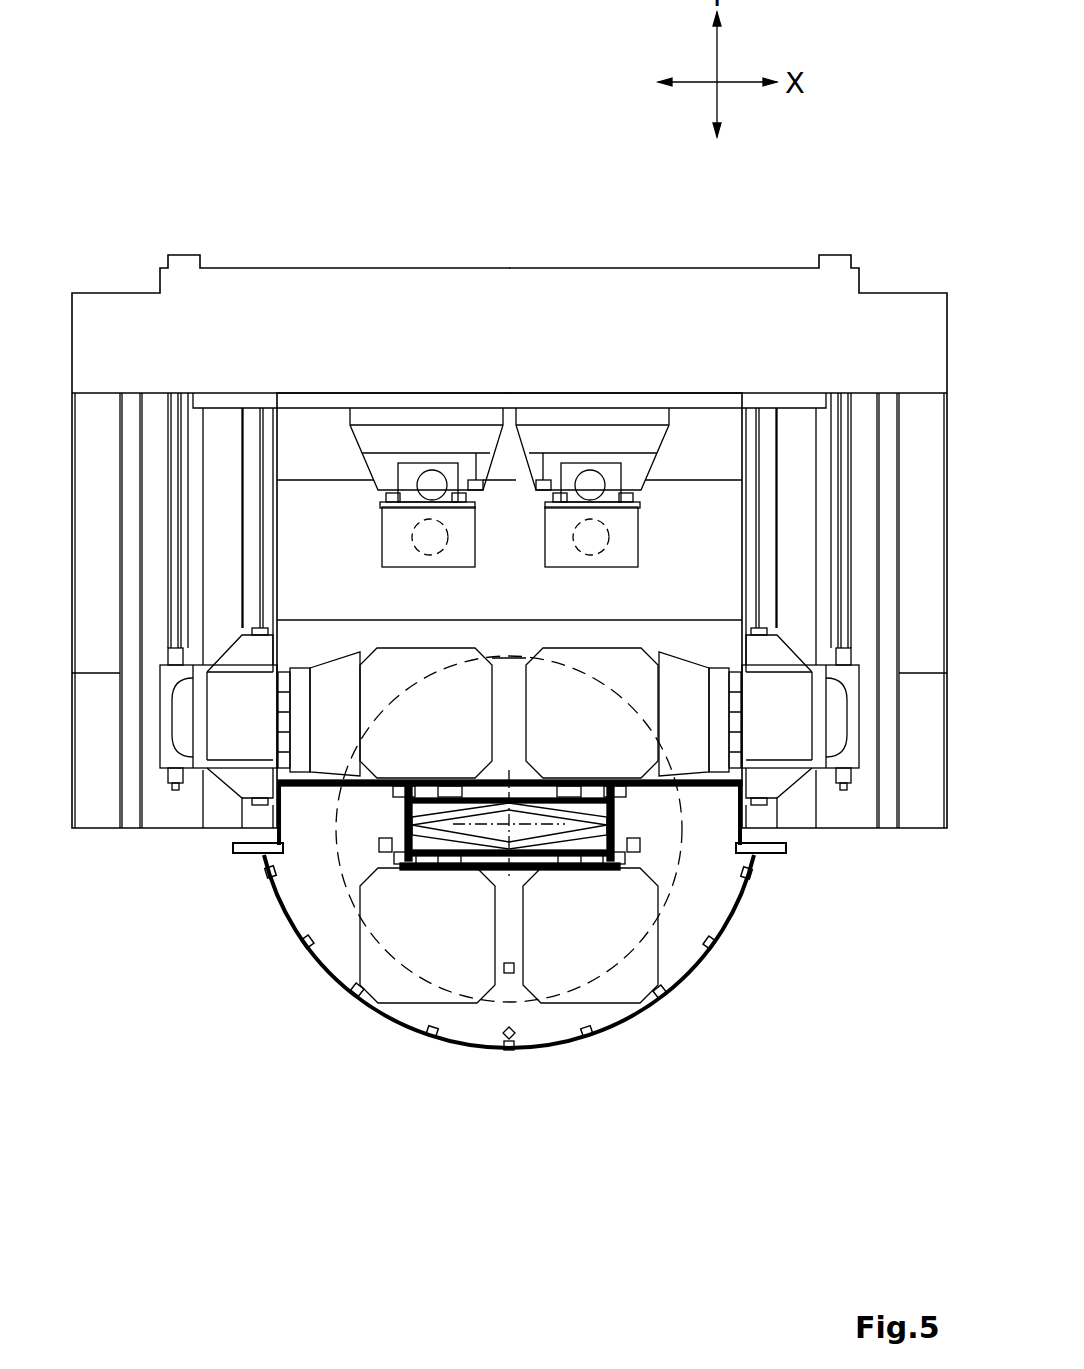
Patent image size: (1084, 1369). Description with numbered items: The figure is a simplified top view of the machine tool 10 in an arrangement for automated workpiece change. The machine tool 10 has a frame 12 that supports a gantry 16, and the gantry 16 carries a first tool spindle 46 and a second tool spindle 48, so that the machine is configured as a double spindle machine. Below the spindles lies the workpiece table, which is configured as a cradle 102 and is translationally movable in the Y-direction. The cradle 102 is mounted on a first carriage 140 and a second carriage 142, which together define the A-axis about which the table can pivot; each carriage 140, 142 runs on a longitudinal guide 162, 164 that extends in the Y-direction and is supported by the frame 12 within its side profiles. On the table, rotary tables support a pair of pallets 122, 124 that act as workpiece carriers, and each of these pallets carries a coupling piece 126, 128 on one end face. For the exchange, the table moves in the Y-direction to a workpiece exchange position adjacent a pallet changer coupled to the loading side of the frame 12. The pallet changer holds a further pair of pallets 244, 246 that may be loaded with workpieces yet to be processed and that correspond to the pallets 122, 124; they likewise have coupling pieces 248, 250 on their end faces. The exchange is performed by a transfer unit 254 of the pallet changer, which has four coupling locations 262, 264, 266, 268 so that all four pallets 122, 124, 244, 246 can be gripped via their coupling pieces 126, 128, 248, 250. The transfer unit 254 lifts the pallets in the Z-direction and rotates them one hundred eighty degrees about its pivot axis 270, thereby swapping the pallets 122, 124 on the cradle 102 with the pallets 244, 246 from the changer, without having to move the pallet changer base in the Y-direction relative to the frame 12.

The machine tool 10 is at (178, 158).
The frame 12 is at (917, 852).
The gantry 16 is at (750, 236).
The first tool spindle 46 is at (432, 508).
The second tool spindle 48 is at (591, 510).
The cradle 102 is at (310, 560).
The pallet 122 is at (452, 690).
The pallet 124 is at (646, 668).
The coupling piece 126 is at (400, 790).
The coupling piece 128 is at (620, 798).
The first carriage 140 is at (220, 738).
The second carriage 142 is at (795, 745).
The longitudinal guide 162 is at (225, 487).
The longitudinal guide 164 is at (793, 483).
The pallet 244 is at (375, 967).
The pallet 246 is at (590, 998).
The coupling piece 248 is at (435, 862).
The coupling piece 250 is at (592, 850).
The transfer unit 254 is at (600, 840).
The coupling location 262 is at (427, 790).
The coupling location 264 is at (588, 785).
The coupling location 266 is at (458, 868).
The coupling location 268 is at (588, 958).
The pivot axis 270 is at (508, 852).